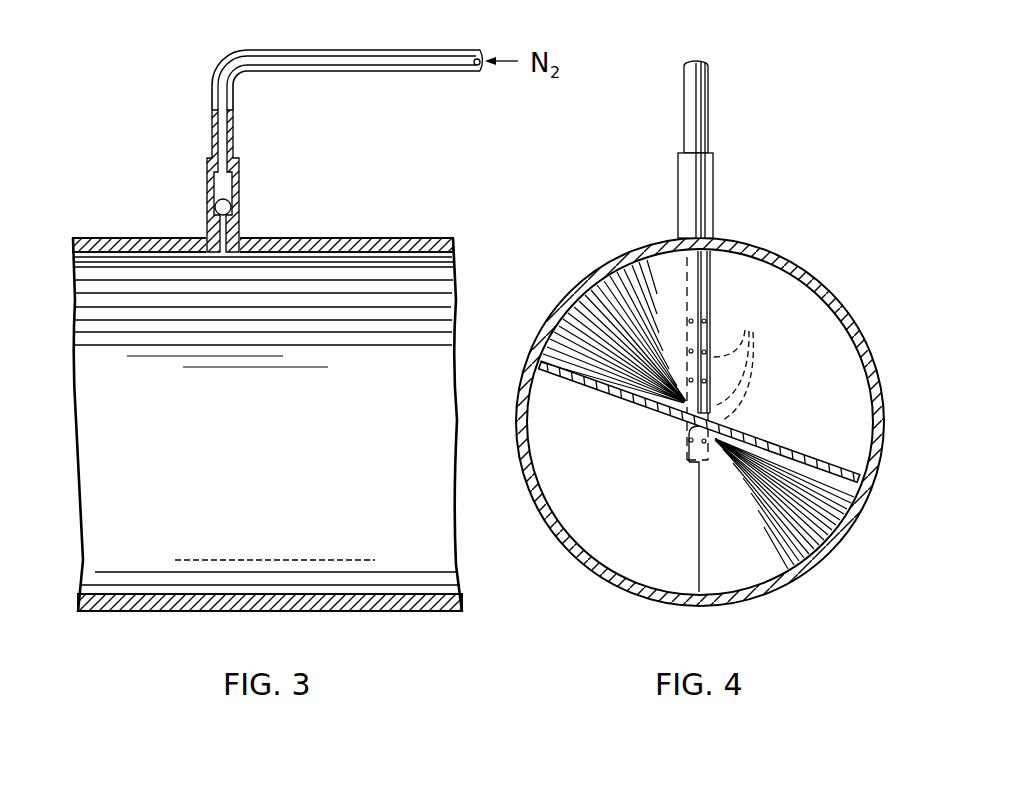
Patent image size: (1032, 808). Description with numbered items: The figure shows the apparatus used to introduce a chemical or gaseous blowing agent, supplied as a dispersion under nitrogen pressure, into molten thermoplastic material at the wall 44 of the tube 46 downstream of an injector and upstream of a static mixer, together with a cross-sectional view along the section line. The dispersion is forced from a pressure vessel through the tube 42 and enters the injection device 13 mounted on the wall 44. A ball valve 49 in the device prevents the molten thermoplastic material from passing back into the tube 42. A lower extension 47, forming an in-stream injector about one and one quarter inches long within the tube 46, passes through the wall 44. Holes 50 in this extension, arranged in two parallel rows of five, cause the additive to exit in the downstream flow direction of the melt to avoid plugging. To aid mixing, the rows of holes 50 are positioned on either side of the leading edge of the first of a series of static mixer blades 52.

In FIG. 3, the nitrogen feed tube 13 is at (213, 60).
In FIG. 3, the tube 42 is at (399, 71).
In FIG. 3, the wall 44 is at (138, 238).
In FIG. 3, the tube 46 is at (271, 430).
In FIG. 4, the tube 46 is at (849, 285).
In FIG. 4, the lower extension 47 is at (714, 309).
In FIG. 3, the ball valve 49 is at (240, 203).
In FIG. 4, the holes 50 is at (712, 323).
In FIG. 4, the static mixer blades 52 is at (672, 333).